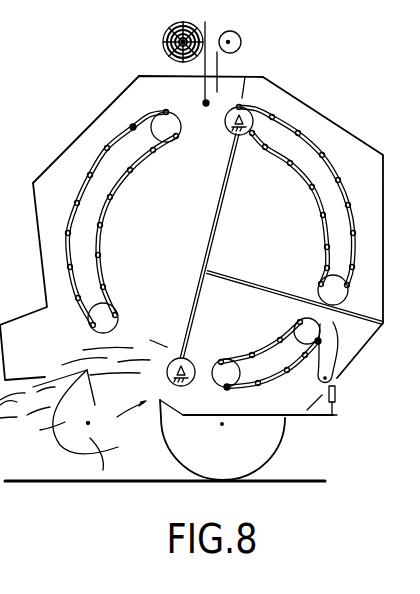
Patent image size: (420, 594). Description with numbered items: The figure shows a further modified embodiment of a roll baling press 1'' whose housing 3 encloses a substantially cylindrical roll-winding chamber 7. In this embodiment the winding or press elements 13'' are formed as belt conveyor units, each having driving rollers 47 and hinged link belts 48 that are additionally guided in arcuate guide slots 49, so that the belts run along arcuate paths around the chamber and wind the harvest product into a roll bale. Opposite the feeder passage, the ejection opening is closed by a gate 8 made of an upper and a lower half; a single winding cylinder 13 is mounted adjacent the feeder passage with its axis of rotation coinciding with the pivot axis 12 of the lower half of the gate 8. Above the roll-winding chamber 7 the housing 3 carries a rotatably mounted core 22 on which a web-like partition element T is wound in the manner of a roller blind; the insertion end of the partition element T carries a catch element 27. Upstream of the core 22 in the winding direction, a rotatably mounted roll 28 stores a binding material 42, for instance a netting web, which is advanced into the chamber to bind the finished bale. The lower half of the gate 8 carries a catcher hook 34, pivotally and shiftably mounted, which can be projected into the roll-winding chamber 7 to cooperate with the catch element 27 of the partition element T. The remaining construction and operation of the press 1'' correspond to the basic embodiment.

The roll baling press 1'' is at (59, 62).
The housing 3 is at (113, 100).
The roll-winding chamber 7 is at (272, 170).
The gate 8 is at (299, 424).
The pivot axis 12 is at (186, 360).
The winding cylinder 13 is at (183, 401).
The winding or press elements 13'' is at (178, 216).
The core 22 is at (164, 36).
The catch element 27 is at (207, 105).
The roll 28 is at (241, 34).
The catcher hook 34 is at (336, 353).
The binding material 42 is at (222, 63).
The driving rollers 47 is at (167, 143).
The hinged link belts 48 is at (77, 187).
The arcuate guide slots 49 is at (68, 255).
The partition element T is at (205, 86).